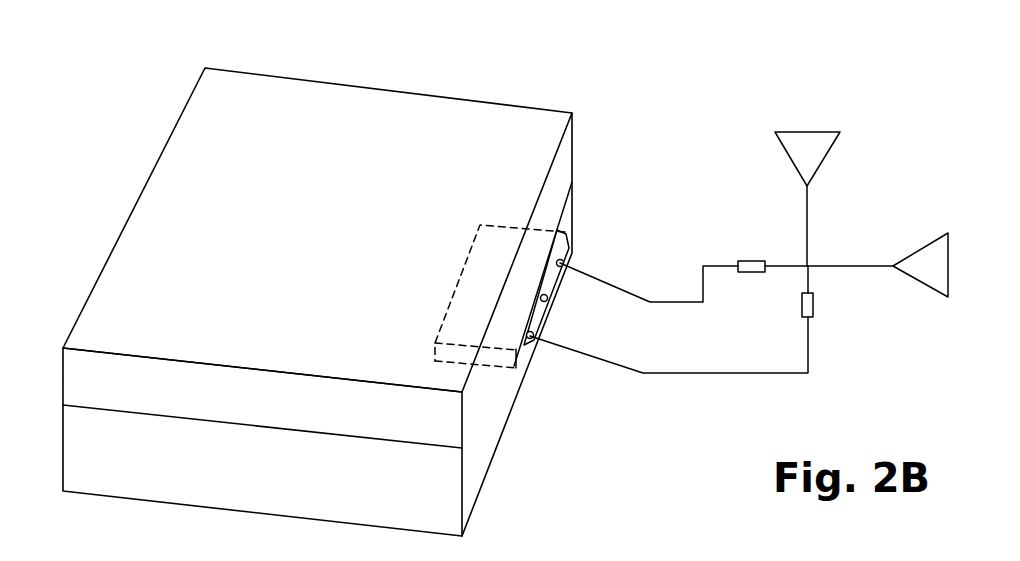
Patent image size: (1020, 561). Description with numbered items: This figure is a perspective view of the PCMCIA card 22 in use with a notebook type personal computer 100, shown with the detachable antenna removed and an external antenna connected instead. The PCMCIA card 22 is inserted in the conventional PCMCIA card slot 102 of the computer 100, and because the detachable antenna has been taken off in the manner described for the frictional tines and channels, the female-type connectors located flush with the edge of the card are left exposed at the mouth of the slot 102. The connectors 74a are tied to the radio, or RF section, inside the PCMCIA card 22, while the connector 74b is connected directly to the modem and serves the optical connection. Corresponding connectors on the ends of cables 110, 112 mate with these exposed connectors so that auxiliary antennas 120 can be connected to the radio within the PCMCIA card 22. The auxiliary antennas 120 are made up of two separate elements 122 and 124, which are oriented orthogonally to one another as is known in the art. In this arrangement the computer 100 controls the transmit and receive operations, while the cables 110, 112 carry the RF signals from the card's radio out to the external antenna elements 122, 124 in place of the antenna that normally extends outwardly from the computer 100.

The notebook type personal computer 100 is at (190, 128).
The PCMCIA card 22 is at (488, 234).
The PCMCIA card slot 102 is at (527, 377).
The female-type connectors 74a is at (563, 262).
The female-type connector 74b is at (547, 300).
The cable 110 is at (708, 260).
The cable 112 is at (692, 375).
The auxiliary antennas 120 is at (861, 207).
The antenna element 122 is at (808, 218).
The antenna element 124 is at (825, 268).